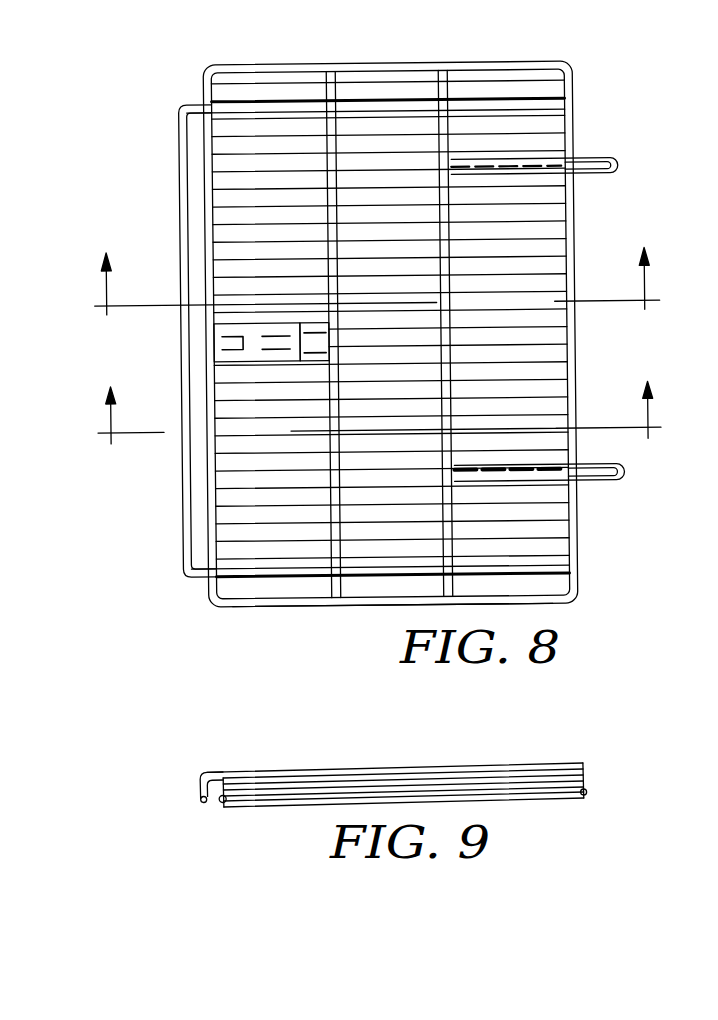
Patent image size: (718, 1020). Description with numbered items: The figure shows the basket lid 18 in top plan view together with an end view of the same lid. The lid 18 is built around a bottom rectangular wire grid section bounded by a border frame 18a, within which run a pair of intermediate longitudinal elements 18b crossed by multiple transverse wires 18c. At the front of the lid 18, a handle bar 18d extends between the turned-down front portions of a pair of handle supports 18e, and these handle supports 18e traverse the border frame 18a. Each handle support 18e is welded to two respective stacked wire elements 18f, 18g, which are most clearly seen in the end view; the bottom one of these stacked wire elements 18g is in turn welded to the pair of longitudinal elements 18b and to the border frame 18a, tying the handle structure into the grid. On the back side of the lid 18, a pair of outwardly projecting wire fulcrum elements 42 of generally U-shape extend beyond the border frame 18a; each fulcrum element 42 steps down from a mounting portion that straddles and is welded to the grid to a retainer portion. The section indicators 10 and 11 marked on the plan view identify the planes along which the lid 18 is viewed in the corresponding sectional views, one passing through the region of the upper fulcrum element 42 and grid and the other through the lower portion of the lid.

In FIG. 8, the basket lid 18 is at (211, 606).
In FIG. 8, the border frame 18a is at (306, 607).
In FIG. 9, the border frame 18a is at (588, 796).
In FIG. 8, the intermediate longitudinal elements 18b is at (440, 92).
In FIG. 8, the transverse wires 18c is at (520, 357).
In FIG. 8, the handle bar 18d is at (183, 512).
In FIG. 9, the handle bar 18d is at (196, 798).
In FIG. 9, the handle supports 18e is at (378, 771).
In FIG. 9, the stacked wire element 18f is at (569, 768).
In FIG. 9, the stacked wire element 18g is at (584, 778).
In FIG. 8, the wire fulcrum elements 42 is at (606, 159).
In FIG. 8, the section line 10- 10 is at (373, 259).
In FIG. 8, the section line 11- 11 is at (377, 397).